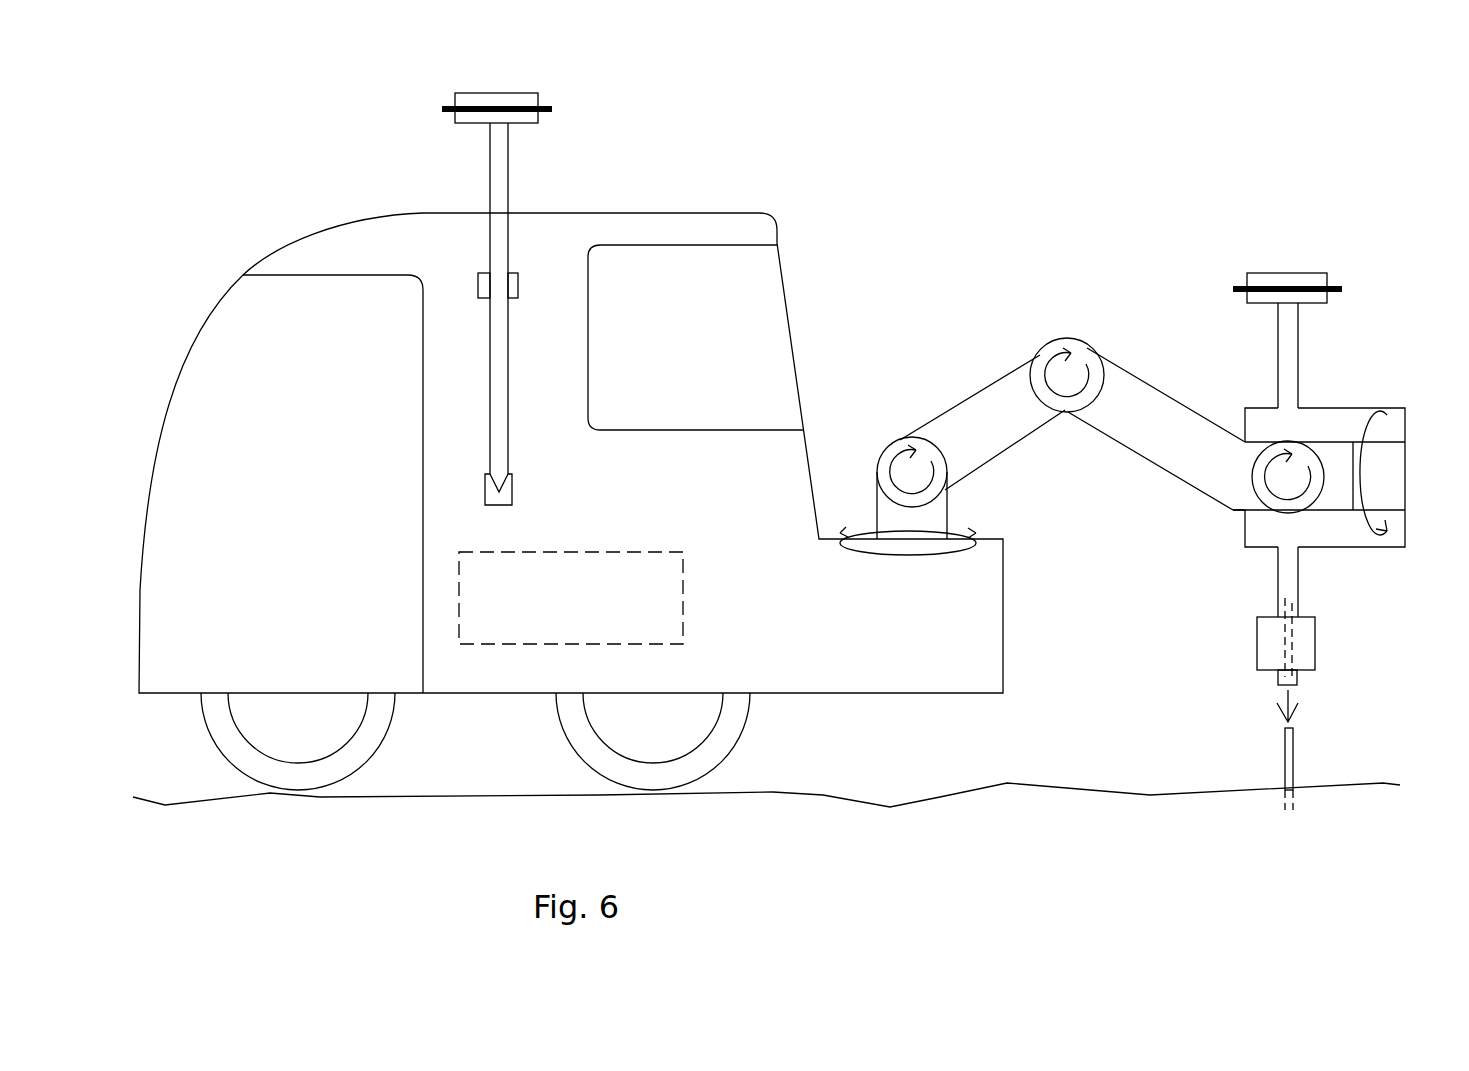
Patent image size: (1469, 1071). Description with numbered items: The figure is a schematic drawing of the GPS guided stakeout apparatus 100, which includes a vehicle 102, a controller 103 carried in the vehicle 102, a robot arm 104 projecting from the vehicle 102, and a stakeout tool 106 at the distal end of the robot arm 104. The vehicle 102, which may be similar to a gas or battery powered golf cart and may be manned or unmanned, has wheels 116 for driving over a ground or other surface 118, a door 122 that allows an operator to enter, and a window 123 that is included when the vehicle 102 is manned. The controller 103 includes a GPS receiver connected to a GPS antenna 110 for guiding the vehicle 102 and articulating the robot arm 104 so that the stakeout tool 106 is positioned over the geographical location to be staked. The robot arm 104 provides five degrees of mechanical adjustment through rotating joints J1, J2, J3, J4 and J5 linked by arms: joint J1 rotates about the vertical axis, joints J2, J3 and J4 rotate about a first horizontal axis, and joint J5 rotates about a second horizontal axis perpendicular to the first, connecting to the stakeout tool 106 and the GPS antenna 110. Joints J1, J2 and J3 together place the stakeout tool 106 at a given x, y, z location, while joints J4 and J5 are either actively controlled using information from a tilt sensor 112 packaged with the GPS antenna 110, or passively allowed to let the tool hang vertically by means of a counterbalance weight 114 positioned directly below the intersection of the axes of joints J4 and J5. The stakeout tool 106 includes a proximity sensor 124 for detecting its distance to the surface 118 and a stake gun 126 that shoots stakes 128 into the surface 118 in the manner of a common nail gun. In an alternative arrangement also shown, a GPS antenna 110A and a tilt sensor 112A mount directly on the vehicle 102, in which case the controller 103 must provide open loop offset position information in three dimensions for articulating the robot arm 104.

The GPS guided stakeout apparatus 100 is at (902, 143).
The vehicle 102 is at (287, 245).
The controller 103 is at (571, 598).
The robot arm 104 is at (1242, 338).
The stakeout tool 106 is at (1318, 552).
The GPS antenna 110 is at (1330, 300).
The GPS antenna 110A is at (455, 120).
The tilt sensor 112 is at (1315, 305).
The tilt sensor 112A is at (483, 123).
The counterbalance weight 114 is at (1257, 658).
The wheels 116 is at (559, 739).
The surface 118 is at (1000, 783).
The door 122 is at (333, 484).
The window 123 is at (696, 337).
The proximity sensor 124 is at (1278, 685).
The stake gun 126 is at (1278, 680).
The stakes 128 is at (1292, 650).
The joint J1 is at (907, 542).
The joint J2 is at (913, 477).
The joint J3 is at (1068, 378).
The joint J4 is at (1283, 478).
The joint J5 is at (1377, 473).